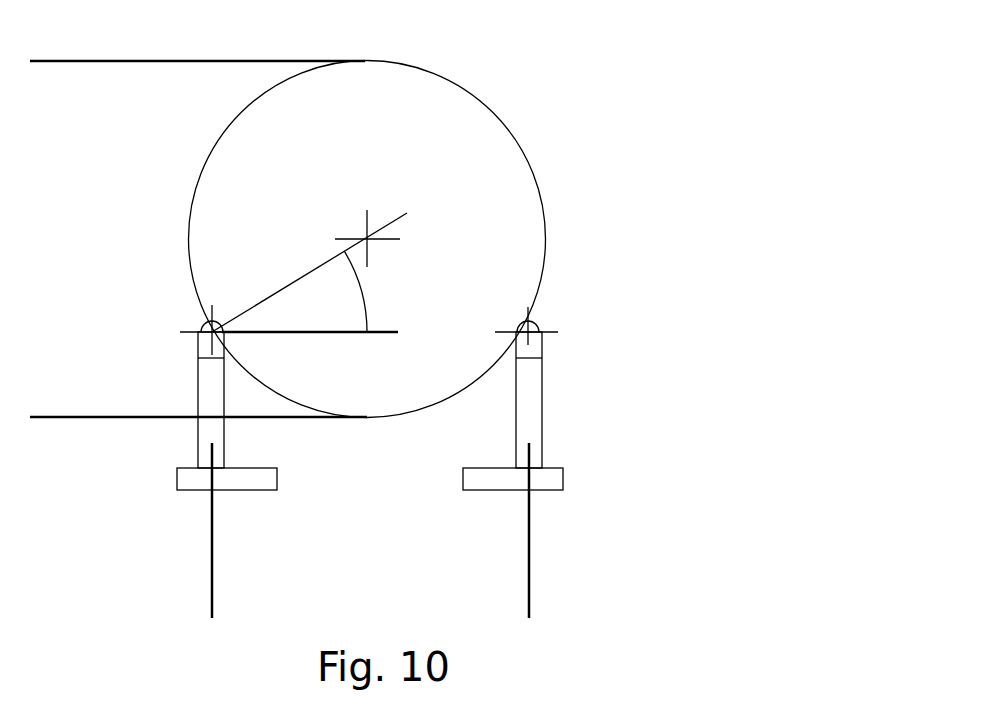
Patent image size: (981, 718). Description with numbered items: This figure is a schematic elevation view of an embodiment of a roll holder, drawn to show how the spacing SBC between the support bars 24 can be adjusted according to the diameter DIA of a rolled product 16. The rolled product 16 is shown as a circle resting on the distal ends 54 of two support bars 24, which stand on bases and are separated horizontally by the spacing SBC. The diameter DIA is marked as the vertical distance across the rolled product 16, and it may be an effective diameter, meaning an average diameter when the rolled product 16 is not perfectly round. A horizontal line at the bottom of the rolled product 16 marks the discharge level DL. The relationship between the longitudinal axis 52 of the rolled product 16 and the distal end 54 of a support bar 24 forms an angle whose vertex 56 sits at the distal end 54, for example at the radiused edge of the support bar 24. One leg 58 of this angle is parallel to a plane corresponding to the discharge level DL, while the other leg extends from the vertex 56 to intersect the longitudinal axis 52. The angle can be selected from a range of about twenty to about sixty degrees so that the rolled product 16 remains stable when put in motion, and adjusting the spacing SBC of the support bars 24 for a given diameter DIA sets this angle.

The rolled product 16 is at (529, 134).
The longitudinal axis 52 is at (338, 221).
The distal end 54 is at (546, 326).
The vertex 56 is at (196, 322).
The leg 58 is at (400, 326).
The support bar 24 is at (542, 379).
The discharge level DL is at (571, 424).
The diameter DIA is at (83, 403).
The spacing SBC is at (515, 592).